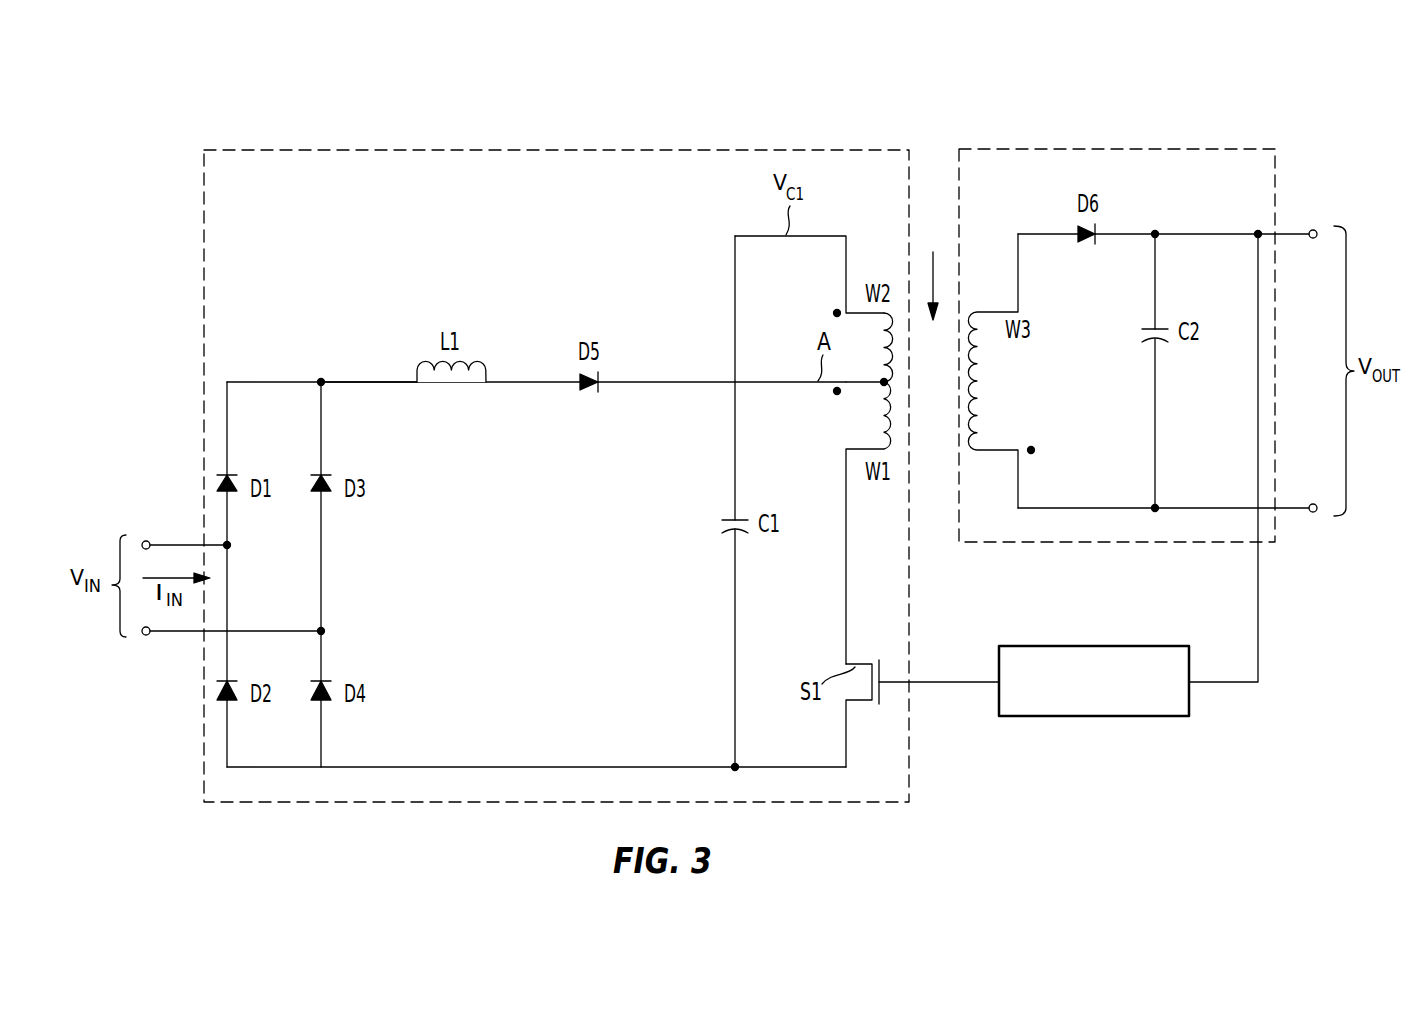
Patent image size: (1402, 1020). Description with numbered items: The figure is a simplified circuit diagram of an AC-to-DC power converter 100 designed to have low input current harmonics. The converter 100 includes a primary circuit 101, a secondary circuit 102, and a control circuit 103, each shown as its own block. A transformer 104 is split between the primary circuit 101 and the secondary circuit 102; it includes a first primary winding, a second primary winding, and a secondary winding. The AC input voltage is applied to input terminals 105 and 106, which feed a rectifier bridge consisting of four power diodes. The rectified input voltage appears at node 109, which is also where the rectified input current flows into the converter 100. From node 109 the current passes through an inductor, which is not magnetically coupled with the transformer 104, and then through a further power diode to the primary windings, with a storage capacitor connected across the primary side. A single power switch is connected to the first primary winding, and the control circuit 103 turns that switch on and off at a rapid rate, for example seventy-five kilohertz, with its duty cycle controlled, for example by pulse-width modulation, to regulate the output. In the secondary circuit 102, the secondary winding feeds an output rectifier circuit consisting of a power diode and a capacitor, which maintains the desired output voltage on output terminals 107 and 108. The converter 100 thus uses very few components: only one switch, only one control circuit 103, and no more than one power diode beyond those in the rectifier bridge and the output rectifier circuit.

The AC-to-DC power converter 100 is at (190, 124).
The primary circuit 101 is at (838, 150).
The secondary circuit 102 is at (1222, 148).
The control circuit 103 is at (1161, 718).
The transformer 104 is at (935, 272).
The input terminal 105 is at (170, 541).
The input terminal 106 is at (170, 636).
The output terminal 107 is at (1297, 230).
The output terminal 108 is at (1298, 512).
The node 109 is at (362, 381).